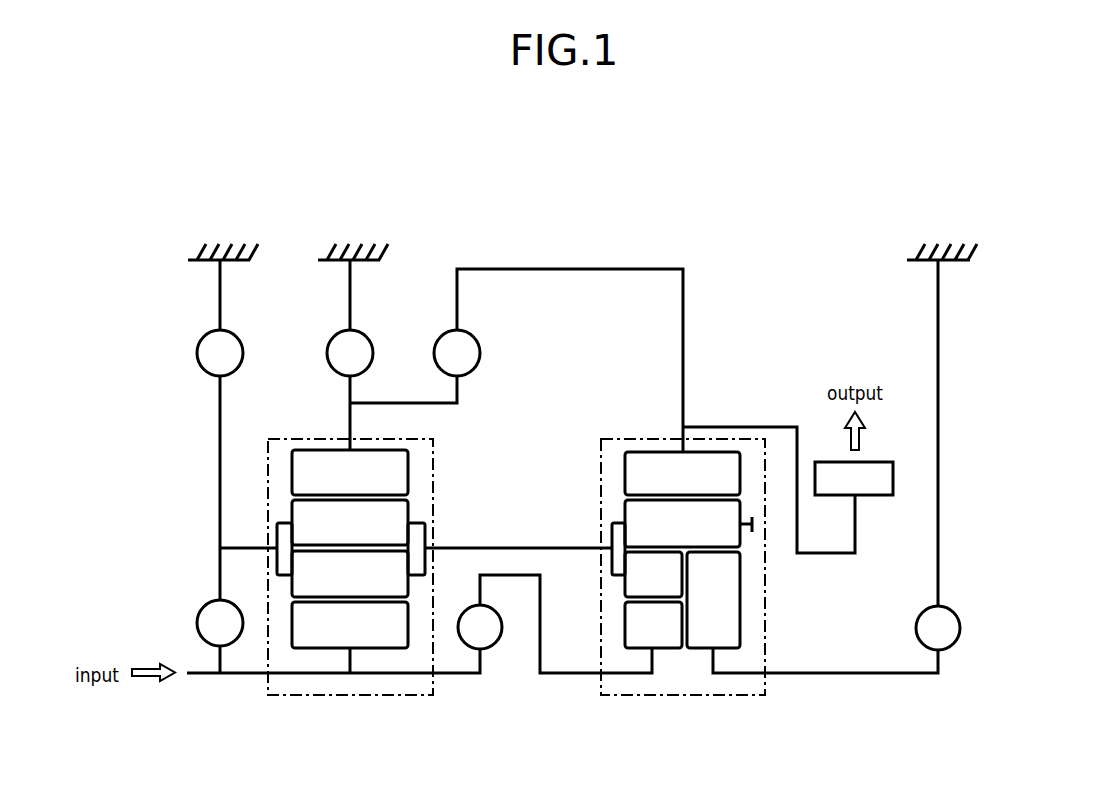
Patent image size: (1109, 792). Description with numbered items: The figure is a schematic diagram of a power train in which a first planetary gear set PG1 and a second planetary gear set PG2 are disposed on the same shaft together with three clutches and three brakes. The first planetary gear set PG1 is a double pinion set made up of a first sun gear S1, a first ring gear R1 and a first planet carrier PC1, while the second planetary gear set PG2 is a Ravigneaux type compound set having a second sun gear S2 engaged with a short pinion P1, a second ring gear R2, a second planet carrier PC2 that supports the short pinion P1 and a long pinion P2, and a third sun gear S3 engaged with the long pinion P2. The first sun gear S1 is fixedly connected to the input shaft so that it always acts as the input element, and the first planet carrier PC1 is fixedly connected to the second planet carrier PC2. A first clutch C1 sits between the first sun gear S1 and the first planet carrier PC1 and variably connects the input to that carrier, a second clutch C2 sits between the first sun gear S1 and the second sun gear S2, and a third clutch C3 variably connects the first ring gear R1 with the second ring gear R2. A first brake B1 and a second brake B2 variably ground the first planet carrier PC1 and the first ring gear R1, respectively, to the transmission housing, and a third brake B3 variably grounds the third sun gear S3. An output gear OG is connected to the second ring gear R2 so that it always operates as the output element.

The first brake B1 is at (220, 353).
The second brake B2 is at (350, 353).
The third brake B3 is at (938, 628).
The first clutch C1 is at (220, 623).
The second clutch C2 is at (480, 627).
The third clutch C3 is at (457, 353).
The first planetary gear set PG1 is at (350, 697).
The second planetary gear set PG2 is at (696, 697).
The first ring gear R1 is at (350, 472).
The second ring gear R2 is at (682, 473).
The first sun gear S1 is at (350, 625).
The second sun gear S2 is at (653, 625).
The third sun gear S3 is at (713, 600).
The short pinion P1 is at (653, 574).
The long pinion P2 is at (688, 523).
The first planet carrier PC1 is at (433, 537).
The second planet carrier PC2 is at (600, 537).
The output gear OG is at (854, 478).